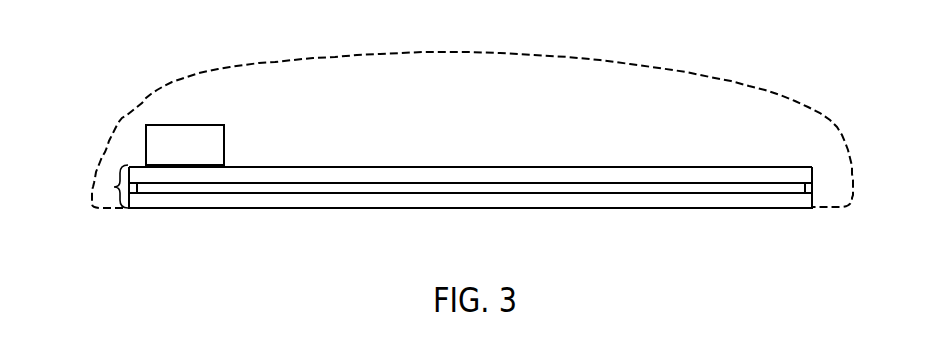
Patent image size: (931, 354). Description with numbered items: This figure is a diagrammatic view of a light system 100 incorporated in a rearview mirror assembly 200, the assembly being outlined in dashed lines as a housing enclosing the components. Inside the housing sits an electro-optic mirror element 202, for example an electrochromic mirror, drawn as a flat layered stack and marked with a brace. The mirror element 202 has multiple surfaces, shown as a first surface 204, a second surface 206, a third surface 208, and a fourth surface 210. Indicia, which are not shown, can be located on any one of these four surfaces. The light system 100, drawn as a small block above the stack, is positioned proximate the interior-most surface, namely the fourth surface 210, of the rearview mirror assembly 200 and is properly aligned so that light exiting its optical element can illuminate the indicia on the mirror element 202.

The light system 100 is at (172, 125).
The rearview mirror assembly 200 is at (293, 60).
The electro-optic mirror element 202 is at (113, 187).
The first surface 204 is at (252, 209).
The second surface 206 is at (320, 194).
The third surface 208 is at (387, 184).
The fourth surface 210 is at (450, 168).